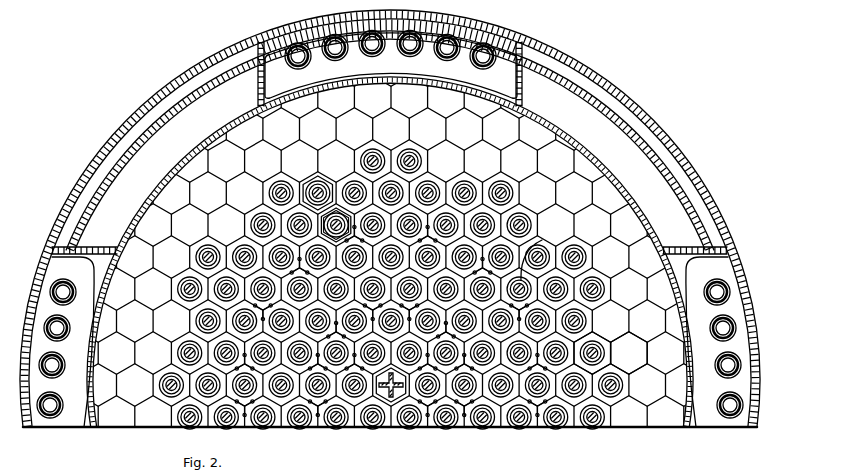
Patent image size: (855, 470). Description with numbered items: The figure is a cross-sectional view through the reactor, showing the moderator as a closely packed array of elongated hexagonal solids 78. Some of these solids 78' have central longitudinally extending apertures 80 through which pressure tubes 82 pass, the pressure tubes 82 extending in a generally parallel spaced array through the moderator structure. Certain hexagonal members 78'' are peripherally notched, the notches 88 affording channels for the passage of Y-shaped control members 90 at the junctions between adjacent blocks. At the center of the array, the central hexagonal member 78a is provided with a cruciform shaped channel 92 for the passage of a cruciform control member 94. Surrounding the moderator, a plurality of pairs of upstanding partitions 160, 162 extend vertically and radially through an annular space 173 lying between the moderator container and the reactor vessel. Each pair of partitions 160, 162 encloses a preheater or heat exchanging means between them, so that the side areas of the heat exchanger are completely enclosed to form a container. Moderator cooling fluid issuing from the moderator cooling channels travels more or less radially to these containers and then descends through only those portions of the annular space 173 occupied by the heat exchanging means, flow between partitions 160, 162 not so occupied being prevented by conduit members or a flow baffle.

The elongated hexagonal solid 78 is at (633, 361).
The apertured hexagonal solid 78' is at (604, 329).
The peripherally notched hexagonal member 78'' is at (311, 185).
The central hexagonal member 78a is at (388, 398).
The central longitudinally extending aperture 80 is at (585, 257).
The pressure tube 82 is at (504, 254).
The peripheral notch 88 is at (339, 207).
The Y-shaped control member 90 is at (428, 234).
The cruciform shaped channel 92 is at (398, 402).
The cruciform control member 94 is at (366, 398).
The upstanding partition 160 is at (694, 243).
The upstanding partition 162 is at (523, 98).
The annular space 173 is at (655, 190).